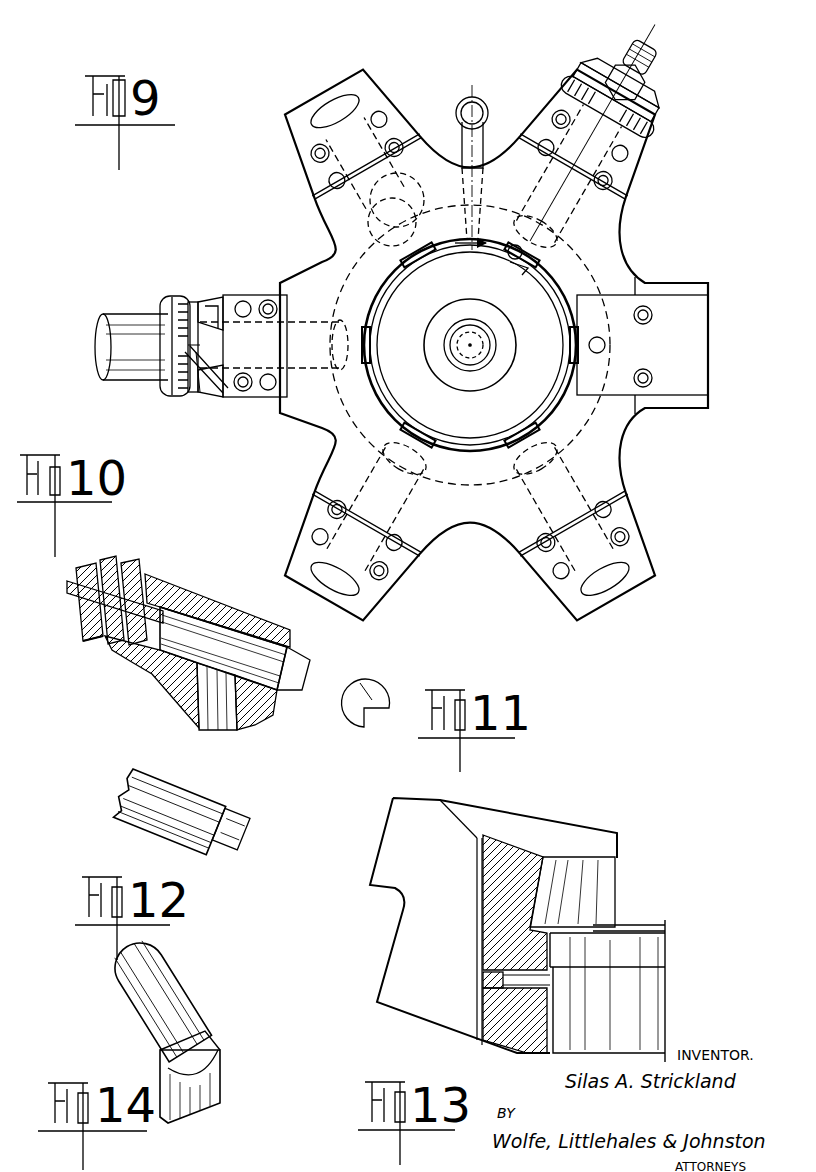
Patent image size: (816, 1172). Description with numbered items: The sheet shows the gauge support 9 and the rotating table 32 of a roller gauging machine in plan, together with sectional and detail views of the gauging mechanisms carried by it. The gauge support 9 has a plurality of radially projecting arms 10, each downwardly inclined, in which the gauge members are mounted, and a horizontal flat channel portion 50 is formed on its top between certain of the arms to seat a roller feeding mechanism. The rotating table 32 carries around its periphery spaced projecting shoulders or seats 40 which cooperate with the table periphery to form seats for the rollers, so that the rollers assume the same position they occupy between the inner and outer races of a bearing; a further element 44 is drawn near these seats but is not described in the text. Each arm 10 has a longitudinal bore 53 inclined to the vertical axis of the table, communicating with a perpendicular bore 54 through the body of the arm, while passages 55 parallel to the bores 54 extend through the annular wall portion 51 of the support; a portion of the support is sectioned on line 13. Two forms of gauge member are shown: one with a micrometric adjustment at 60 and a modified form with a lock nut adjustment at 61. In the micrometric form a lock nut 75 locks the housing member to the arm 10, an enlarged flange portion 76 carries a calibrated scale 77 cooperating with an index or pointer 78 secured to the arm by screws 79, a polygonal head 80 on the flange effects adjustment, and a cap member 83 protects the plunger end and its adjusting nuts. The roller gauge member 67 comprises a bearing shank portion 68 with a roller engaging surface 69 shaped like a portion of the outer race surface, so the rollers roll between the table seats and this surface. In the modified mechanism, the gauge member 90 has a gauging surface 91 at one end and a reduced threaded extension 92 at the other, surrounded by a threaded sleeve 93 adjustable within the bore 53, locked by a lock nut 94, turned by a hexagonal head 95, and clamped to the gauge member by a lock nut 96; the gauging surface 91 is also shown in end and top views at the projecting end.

In FIG. 9, the gauge support 9 is at (637, 261).
In FIG. 13, the gauge support 9 is at (388, 952).
In FIG. 9, the radially projecting arms 10 is at (668, 42).
In FIG. 10, the radially projecting arms 10 is at (140, 673).
In FIG. 13, the radially projecting arms 10 is at (403, 818).
In FIG. 9, the section line 13— 13 is at (487, 82).
In FIG. 9, the rotating table 32 is at (478, 405).
In FIG. 9, the projecting shoulders or seats 40 is at (525, 256).
In FIG. 9, the stop lug 44 is at (521, 262).
In FIG. 9, the horizontal flat channel portion 50 is at (692, 351).
In FIG. 13, the horizontal flat channel portion 50 is at (656, 920).
In FIG. 13, the annular wall portion 51 is at (513, 1028).
In FIG. 9, the longitudinal bore 53 is at (333, 111).
In FIG. 10, the longitudinal bore 53 is at (276, 627).
In FIG. 10, the bore 54 is at (242, 708).
In FIG. 9, the passages 55 is at (378, 223).
In FIG. 9, the gauge member with micrometric adjustment 60 is at (170, 312).
In FIG. 9, the gauge member with lock nut adjustment 61 is at (656, 121).
In FIG. 14, the roller gauge member 67 is at (130, 1032).
In FIG. 14, the bearing shank portion 68 is at (153, 1002).
In FIG. 14, the roller engaging surface 69 is at (197, 1067).
In FIG. 9, the lock nut 75 is at (200, 394).
In FIG. 9, the enlarged flange portion 76 is at (172, 392).
In FIG. 9, the scale 77 is at (188, 301).
In FIG. 9, the index or pointer 78 is at (218, 340).
In FIG. 9, the screws 79 is at (242, 397).
In FIG. 9, the polygonal head 80 is at (166, 383).
In FIG. 9, the cap member 83 is at (104, 343).
In FIG. 10, the gauge member 90 is at (214, 640).
In FIG. 12, the gauge member 90 is at (172, 799).
In FIG. 10, the gauging surface 91 is at (312, 672).
In FIG. 11, the gauging surface 91 is at (362, 685).
In FIG. 12, the gauging surface 91 is at (249, 829).
In FIG. 10, the threaded extension 92 is at (167, 605).
In FIG. 10, the threaded sleeve 93 is at (152, 592).
In FIG. 10, the lock nut 94 is at (99, 650).
In FIG. 10, the hexagonal head 95 is at (84, 640).
In FIG. 10, the lock nut 96 is at (72, 607).